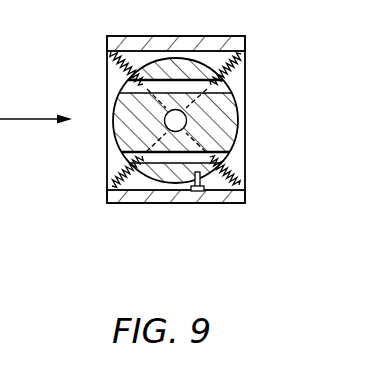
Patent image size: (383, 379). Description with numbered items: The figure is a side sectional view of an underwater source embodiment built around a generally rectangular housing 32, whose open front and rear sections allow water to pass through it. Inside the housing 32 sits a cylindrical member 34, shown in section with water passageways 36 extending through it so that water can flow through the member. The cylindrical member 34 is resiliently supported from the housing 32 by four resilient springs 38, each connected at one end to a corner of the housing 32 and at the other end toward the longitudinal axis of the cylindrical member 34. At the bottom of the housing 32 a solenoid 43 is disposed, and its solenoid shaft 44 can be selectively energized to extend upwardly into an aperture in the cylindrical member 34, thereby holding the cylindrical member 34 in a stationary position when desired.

The housing 32 is at (183, 41).
The cylindrical member 34 is at (238, 131).
The water passageways 36 is at (235, 85).
The resilient springs 38 is at (107, 63).
The solenoid 43 is at (195, 192).
The solenoid shaft 44 is at (193, 184).